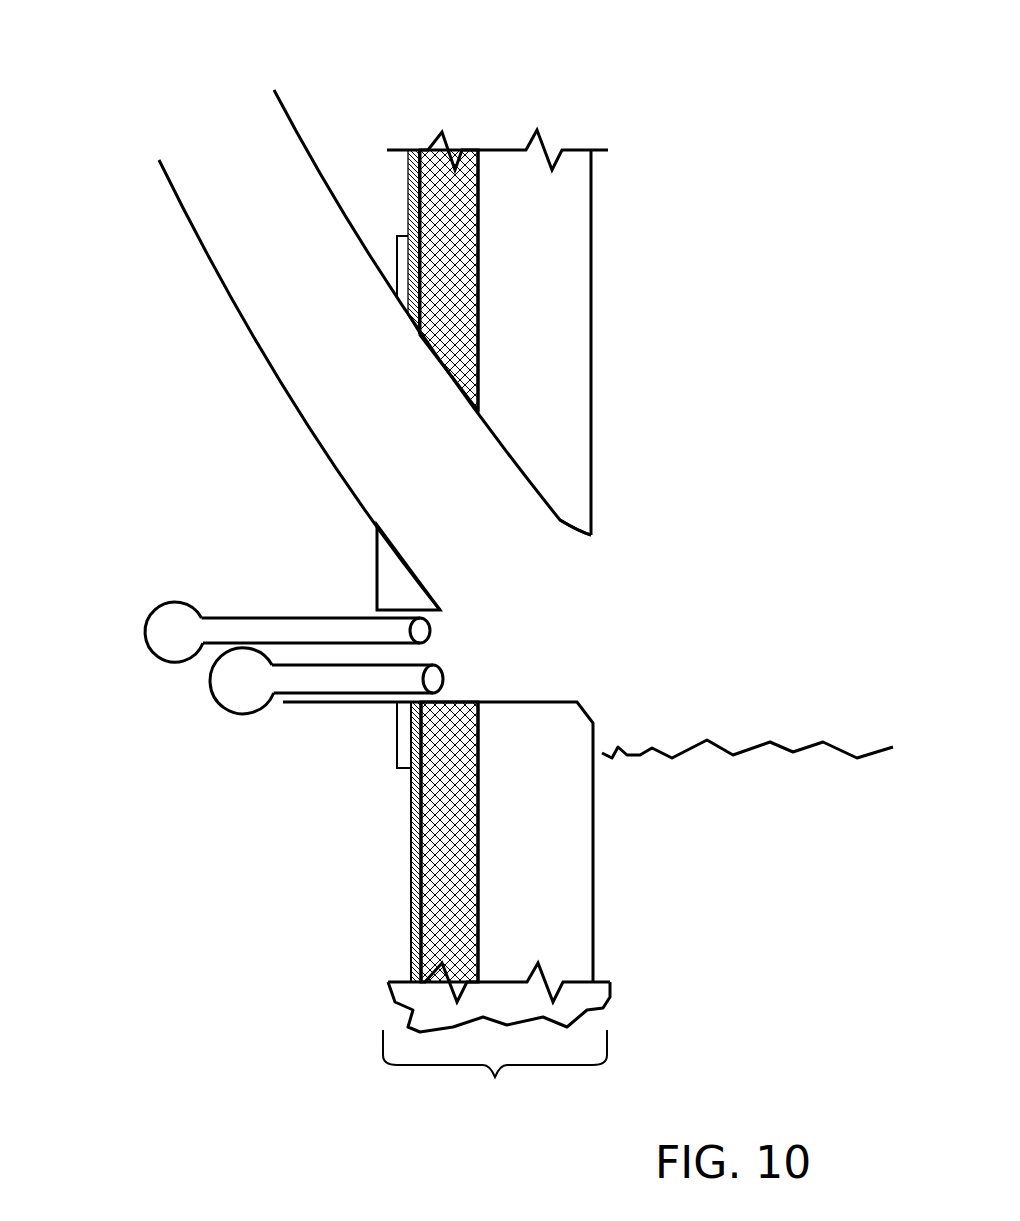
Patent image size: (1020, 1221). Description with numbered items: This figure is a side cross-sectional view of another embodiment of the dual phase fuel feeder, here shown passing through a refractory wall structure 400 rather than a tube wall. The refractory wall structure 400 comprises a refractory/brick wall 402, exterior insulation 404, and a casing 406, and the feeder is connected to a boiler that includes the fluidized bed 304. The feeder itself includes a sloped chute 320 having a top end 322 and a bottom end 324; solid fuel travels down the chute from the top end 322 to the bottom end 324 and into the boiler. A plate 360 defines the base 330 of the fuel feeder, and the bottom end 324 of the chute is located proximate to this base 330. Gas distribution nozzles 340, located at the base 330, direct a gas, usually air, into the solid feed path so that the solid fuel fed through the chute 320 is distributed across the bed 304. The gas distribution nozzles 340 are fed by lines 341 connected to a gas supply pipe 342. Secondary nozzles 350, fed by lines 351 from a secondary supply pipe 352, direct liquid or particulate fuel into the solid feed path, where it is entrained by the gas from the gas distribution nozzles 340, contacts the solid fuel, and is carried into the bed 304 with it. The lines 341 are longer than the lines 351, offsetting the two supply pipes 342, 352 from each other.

The fluidized bed 304 is at (763, 816).
The sloped chute 320 is at (265, 352).
The top end 322 is at (177, 198).
The bottom end 324 is at (325, 450).
The base 330 is at (550, 672).
The gas distribution nozzles 340 is at (269, 754).
The lines 341 is at (292, 695).
The gas supply pipe 342 is at (217, 702).
The secondary nozzles 350 is at (229, 651).
The lines 351 is at (220, 620).
The secondary supply pipe 352 is at (140, 645).
The plate 360 is at (338, 707).
The refractory wall structure 400 is at (496, 1049).
The refractory/brick wall 402 is at (572, 177).
The exterior insulation 404 is at (465, 157).
The casing 406 is at (407, 193).